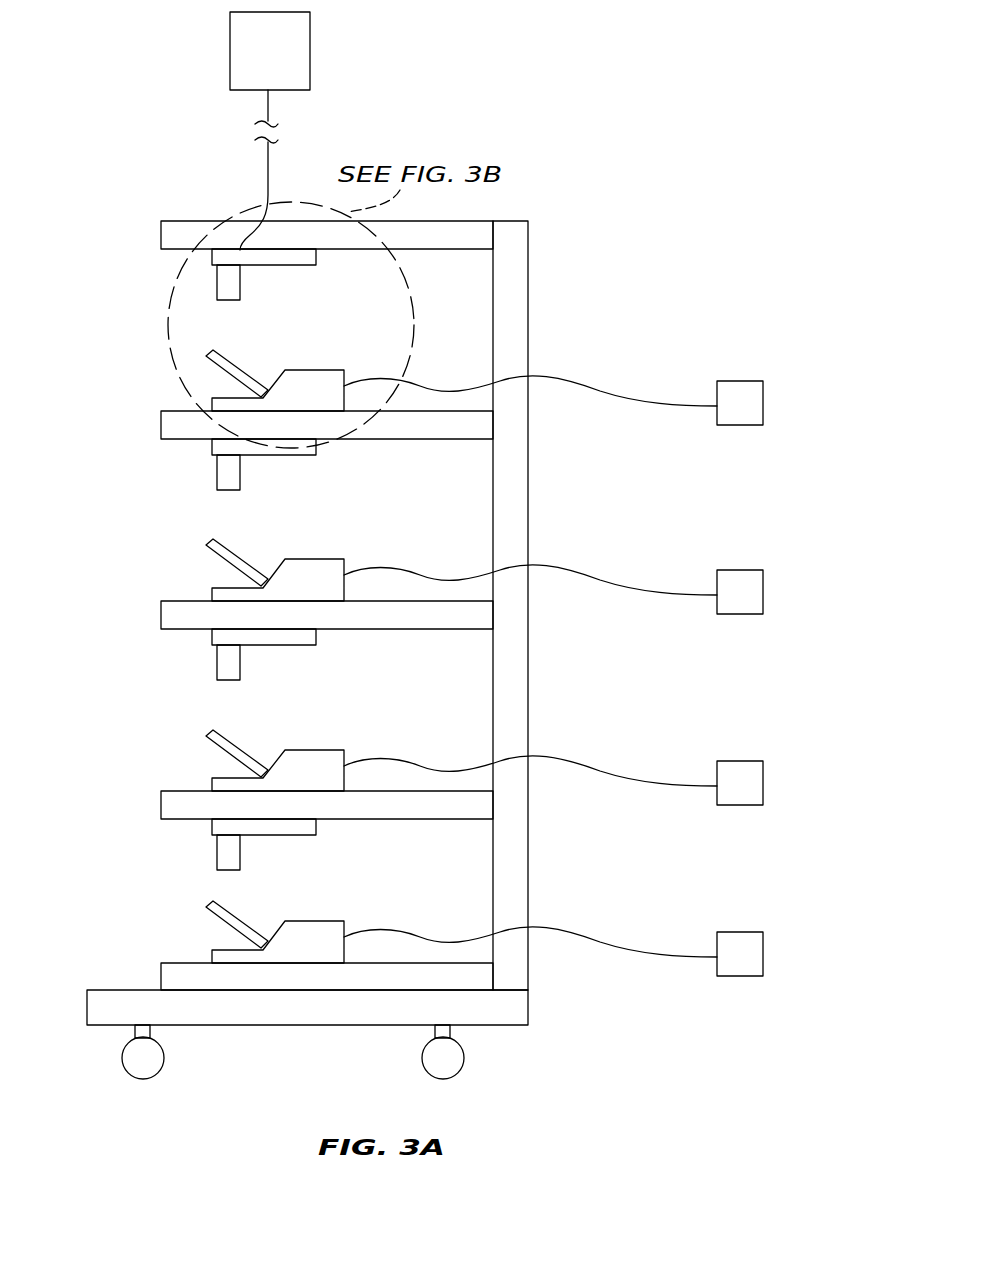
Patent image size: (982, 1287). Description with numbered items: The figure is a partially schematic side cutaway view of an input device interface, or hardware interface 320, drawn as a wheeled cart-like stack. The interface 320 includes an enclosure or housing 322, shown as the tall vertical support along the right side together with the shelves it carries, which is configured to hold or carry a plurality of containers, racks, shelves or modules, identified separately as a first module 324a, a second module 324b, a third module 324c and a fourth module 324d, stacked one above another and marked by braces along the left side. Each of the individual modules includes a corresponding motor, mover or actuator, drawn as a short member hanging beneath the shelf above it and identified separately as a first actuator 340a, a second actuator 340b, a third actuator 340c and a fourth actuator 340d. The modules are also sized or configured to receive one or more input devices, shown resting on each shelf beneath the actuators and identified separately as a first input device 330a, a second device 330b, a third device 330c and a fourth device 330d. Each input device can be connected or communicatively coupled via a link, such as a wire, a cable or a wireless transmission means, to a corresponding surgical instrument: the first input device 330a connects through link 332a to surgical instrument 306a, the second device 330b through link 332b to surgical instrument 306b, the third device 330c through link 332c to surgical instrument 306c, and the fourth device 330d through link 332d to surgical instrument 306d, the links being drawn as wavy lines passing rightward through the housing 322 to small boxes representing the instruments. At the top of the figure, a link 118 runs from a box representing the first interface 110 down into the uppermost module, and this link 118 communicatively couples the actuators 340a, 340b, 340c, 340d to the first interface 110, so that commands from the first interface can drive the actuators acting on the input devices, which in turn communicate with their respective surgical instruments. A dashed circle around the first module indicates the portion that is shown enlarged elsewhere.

The first interface 110 is at (312, 50).
The link 118 is at (270, 100).
The hardware interface 320 is at (108, 163).
The housing 322 is at (530, 309).
The first module 324a is at (107, 255).
The second module 324b is at (107, 452).
The third module 324c is at (107, 635).
The fourth module 324d is at (107, 823).
The first input device 330a is at (312, 370).
The second input device 330b is at (312, 559).
The third input device 330c is at (312, 750).
The fourth input device 330d is at (312, 921).
The link 332a is at (580, 379).
The link 332b is at (580, 568).
The link 332c is at (580, 759).
The link 332d is at (580, 930).
The first actuator 340a is at (217, 280).
The second actuator 340b is at (215, 471).
The third actuator 340c is at (215, 661).
The fourth actuator 340d is at (215, 851).
The surgical instrument 306a is at (733, 381).
The surgical instrument 306b is at (733, 570).
The surgical instrument 306c is at (733, 761).
The surgical instrument 306d is at (733, 932).